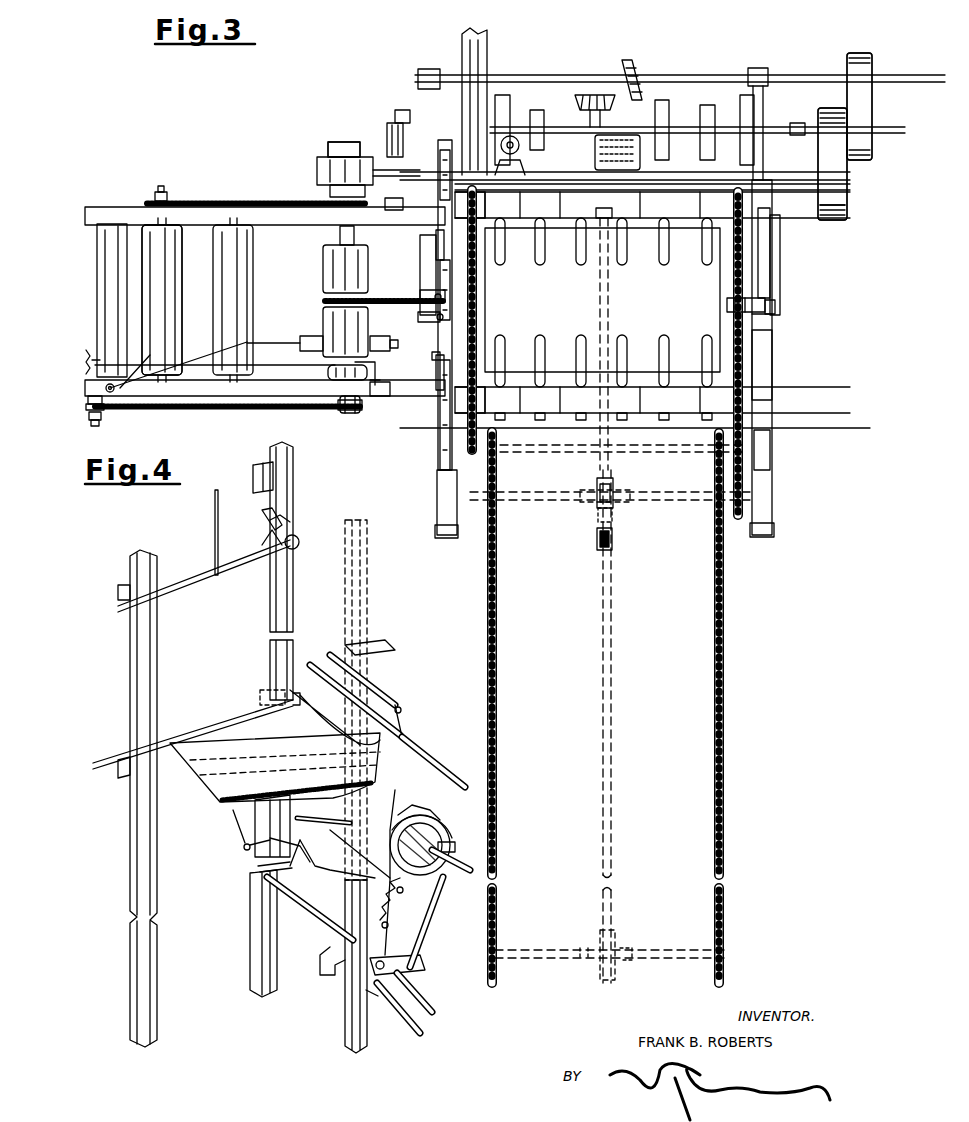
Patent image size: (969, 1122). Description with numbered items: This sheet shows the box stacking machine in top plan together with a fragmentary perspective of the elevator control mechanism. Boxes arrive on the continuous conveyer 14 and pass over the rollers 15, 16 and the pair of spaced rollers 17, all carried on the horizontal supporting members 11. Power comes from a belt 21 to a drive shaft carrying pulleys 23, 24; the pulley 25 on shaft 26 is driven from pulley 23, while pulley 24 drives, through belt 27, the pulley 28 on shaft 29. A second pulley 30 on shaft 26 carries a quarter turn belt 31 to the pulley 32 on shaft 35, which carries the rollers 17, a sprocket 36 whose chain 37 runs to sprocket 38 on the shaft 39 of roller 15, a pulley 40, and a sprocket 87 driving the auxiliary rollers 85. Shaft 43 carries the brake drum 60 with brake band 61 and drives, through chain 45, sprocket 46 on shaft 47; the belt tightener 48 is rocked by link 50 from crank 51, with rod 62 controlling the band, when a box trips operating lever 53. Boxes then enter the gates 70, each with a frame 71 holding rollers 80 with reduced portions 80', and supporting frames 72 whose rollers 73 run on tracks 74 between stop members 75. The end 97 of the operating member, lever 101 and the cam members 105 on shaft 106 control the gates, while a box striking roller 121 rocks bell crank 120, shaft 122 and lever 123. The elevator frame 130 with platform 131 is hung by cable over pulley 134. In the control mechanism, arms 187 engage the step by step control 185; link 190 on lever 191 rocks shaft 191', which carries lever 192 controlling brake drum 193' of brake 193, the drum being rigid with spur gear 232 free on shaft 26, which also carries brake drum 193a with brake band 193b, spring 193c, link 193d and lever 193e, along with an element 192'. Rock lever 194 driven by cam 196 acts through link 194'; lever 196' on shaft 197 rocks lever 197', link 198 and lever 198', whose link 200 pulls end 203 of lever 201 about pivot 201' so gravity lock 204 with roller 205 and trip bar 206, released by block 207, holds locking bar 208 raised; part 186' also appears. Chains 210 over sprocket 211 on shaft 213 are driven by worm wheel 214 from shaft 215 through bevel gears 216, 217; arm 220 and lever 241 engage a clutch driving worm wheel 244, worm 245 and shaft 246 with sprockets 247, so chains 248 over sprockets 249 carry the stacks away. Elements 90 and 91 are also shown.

In FIG. 3, the horizontal supporting members 11 is at (250, 206).
In FIG. 3, the continuous conveyer 14 is at (128, 210).
In FIG. 3, the roller 15 is at (170, 288).
In FIG. 3, the roller 16 is at (250, 246).
In FIG. 3, the spaced rollers 17 is at (325, 265).
In FIG. 3, the belt 21 is at (487, 52).
In FIG. 3, the pulley 23 is at (822, 108).
In FIG. 3, the pulley 24 is at (857, 160).
In FIG. 3, the pulley 25 is at (849, 212).
In FIG. 3, the shaft 26 is at (388, 144).
In FIG. 4, the shaft 26 is at (462, 874).
In FIG. 3, the belt 27 is at (858, 52).
In FIG. 3, the pulley 28 is at (848, 56).
In FIG. 3, the shaft 29 is at (818, 76).
In FIG. 3, the second pulley 30 is at (368, 145).
In FIG. 3, the quarter turn belt 31 is at (317, 165).
In FIG. 3, the pulley 32 is at (318, 192).
In FIG. 3, the shaft 35 is at (338, 232).
In FIG. 3, the sprocket 36 is at (376, 209).
In FIG. 3, the chain 37 is at (190, 201).
In FIG. 3, the sprocket 38 is at (162, 193).
In FIG. 3, the shaft 39 is at (183, 235).
In FIG. 3, the pulley 40 is at (328, 374).
In FIG. 3, the shaft 43 is at (345, 412).
In FIG. 3, the chain 45 is at (230, 409).
In FIG. 3, the sprocket 46 is at (106, 412).
In FIG. 3, the shaft 47 is at (95, 428).
In FIG. 3, the belt tightener 48 is at (376, 376).
In FIG. 3, the link 50 is at (212, 346).
In FIG. 3, the crank 51 is at (95, 359).
In FIG. 3, the operating lever 53 is at (120, 392).
In FIG. 3, the brake drum 60 is at (388, 338).
In FIG. 3, the brake band 61 is at (395, 350).
In FIG. 3, the rod 62 is at (290, 343).
In FIG. 3, the gates 70 is at (690, 216).
In FIG. 3, the frame 71 is at (494, 302).
In FIG. 3, the supporting frames 72 is at (445, 150).
In FIG. 3, the rollers 73 is at (440, 198).
In FIG. 3, the tracks 74 is at (438, 496).
In FIG. 3, the stop members 75 is at (440, 533).
In FIG. 3, the rollers 80 is at (603, 250).
In FIG. 3, the reduced portion 80' is at (603, 377).
In FIG. 3, the auxiliary rollers 85 is at (438, 318).
In FIG. 3, the sprocket 87 is at (340, 297).
In FIG. 3, the block 90 is at (432, 356).
In FIG. 3, the guide 91 is at (438, 236).
In FIG. 3, the end 97 is at (418, 317).
In FIG. 3, the lever 101 is at (420, 250).
In FIG. 3, the cam member 105 is at (402, 120).
In FIG. 4, the shaft 106 is at (456, 782).
In FIG. 3, the bell crank 120 is at (775, 312).
In FIG. 3, the roller 121 is at (727, 305).
In FIG. 3, the shaft 122 is at (772, 325).
In FIG. 3, the lever 123 is at (735, 112).
In FIG. 4, the frame 130 is at (205, 783).
In FIG. 3, the elevator platform 131 is at (602, 300).
In FIG. 3, the pulley 134 is at (603, 339).
In FIG. 4, the step by step control 185 is at (382, 686).
In FIG. 4, the joint 186' is at (410, 721).
In FIG. 4, the spaced arms 187 is at (325, 652).
In FIG. 4, the link 190 is at (350, 741).
In FIG. 4, the lever 191 is at (332, 864).
In FIG. 4, the shaft 191' is at (310, 910).
In FIG. 4, the lever 192 is at (397, 950).
In FIG. 4, the rod 192' is at (440, 922).
In FIG. 4, the brake 193 is at (432, 842).
In FIG. 4, the brake drum 193' is at (460, 838).
In FIG. 4, the brake drum 193a is at (415, 806).
In FIG. 4, the brake band 193b is at (402, 892).
In FIG. 4, the spring 193c is at (388, 926).
In FIG. 4, the link 193d is at (390, 905).
In FIG. 4, the lever 193e is at (370, 1000).
In FIG. 4, the rock lever 194 is at (304, 862).
In FIG. 4, the link 194' is at (220, 826).
In FIG. 4, the cam 196 is at (323, 830).
In FIG. 4, the lever 196' is at (318, 975).
In FIG. 4, the shaft 197 is at (404, 1016).
In FIG. 4, the lever 197' is at (257, 873).
In FIG. 4, the link 198 is at (300, 850).
In FIG. 4, the lever 198' is at (234, 843).
In FIG. 4, the link 200 is at (268, 613).
In FIG. 4, the lever 201 is at (204, 576).
In FIG. 4, the pivot 201' is at (193, 665).
In FIG. 4, the end 203 is at (304, 543).
In FIG. 4, the gravity lock 204 is at (262, 518).
In FIG. 4, the roller 205 is at (262, 545).
In FIG. 4, the trip bar 206 is at (282, 515).
In FIG. 4, the block 207 is at (290, 708).
In FIG. 3, the locking bar 208 is at (440, 295).
In FIG. 4, the locking bar 208 is at (210, 500).
In FIG. 3, the chains 210 is at (478, 332).
In FIG. 3, the sprocket 211 is at (750, 472).
In FIG. 3, the shaft 213 is at (563, 482).
In FIG. 3, the worm wheel 214 is at (614, 516).
In FIG. 3, the shaft 215 is at (612, 582).
In FIG. 3, the bevel gear 216 is at (583, 94).
In FIG. 3, the second bevel gear 217 is at (635, 68).
In FIG. 3, the arm 220 is at (613, 496).
In FIG. 4, the spur gear 232 is at (442, 816).
In FIG. 3, the lever 241 is at (597, 540).
In FIG. 3, the worm wheel 244 is at (600, 935).
In FIG. 3, the worm 245 is at (622, 950).
In FIG. 3, the shaft 246 is at (684, 950).
In FIG. 3, the sprockets 247 is at (727, 956).
In FIG. 3, the chains 248 is at (726, 782).
In FIG. 3, the sprockets 249 is at (740, 446).